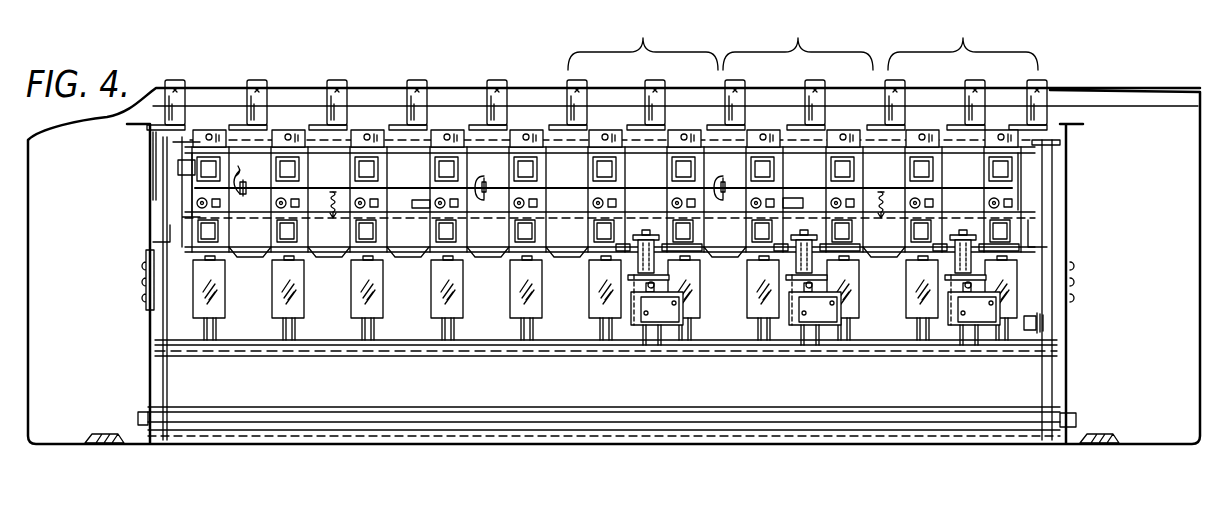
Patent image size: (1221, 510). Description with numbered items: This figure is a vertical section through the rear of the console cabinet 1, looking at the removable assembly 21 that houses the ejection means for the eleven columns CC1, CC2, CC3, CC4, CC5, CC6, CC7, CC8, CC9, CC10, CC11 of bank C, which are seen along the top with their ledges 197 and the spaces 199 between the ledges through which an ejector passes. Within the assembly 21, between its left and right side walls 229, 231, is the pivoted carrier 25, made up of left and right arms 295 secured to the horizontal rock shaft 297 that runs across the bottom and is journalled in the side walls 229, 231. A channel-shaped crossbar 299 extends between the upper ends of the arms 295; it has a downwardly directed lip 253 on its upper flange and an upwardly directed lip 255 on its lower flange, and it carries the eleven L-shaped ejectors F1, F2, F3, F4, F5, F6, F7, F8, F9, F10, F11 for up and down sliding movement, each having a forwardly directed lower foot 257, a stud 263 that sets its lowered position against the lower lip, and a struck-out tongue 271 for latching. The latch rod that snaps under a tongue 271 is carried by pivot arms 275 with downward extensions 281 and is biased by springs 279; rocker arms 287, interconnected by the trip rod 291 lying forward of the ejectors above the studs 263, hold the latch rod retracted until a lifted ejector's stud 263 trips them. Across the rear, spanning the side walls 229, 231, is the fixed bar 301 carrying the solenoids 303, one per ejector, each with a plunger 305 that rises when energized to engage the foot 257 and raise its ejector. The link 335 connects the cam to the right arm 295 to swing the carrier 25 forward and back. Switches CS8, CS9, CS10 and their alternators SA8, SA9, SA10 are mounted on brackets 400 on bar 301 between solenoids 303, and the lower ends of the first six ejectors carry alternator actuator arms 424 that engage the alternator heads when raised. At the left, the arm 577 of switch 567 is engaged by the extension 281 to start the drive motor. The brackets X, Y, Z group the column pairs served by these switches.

The console cabinet 1 is at (39, 455).
The removable assembly 21 is at (137, 384).
The pivoted carrier 25 is at (152, 194).
The ledges 197 is at (186, 131).
The space 199 is at (268, 131).
The side wall 229 is at (147, 341).
The side wall 231 is at (1070, 366).
The downwardly directed lip 253 is at (238, 160).
The upwardly directed lip 255 is at (245, 215).
The lower foot 257 is at (228, 256).
The stud 263 is at (594, 206).
The struck-out tongue 271 is at (622, 206).
The pivot arms 275 is at (178, 170).
The springs 279 is at (333, 188).
The downward extensions 281 is at (165, 231).
The rocker arms 287 is at (477, 183).
The trip rod 291 is at (423, 187).
The arms 295 is at (170, 391).
The rock shaft 297 is at (335, 432).
The crossbar 299 is at (706, 220).
The fixed bar 301 is at (401, 358).
The solenoids 303 is at (225, 291).
The plunger 305 is at (220, 327).
The link 335 is at (1033, 334).
The bracket 400 is at (643, 325).
The alternator actuator arm 424 is at (700, 253).
The switch 567 is at (156, 291).
The arm 577 is at (149, 263).
The column CC1 is at (1006, 93).
The column CC2 is at (930, 93).
The column CC3 is at (849, 93).
The column CC4 is at (770, 93).
The column CC5 is at (693, 93).
The column CC6 is at (613, 93).
The column CC7 is at (533, 93).
The column CC8 is at (453, 93).
The column CC9 is at (373, 93).
The column CC10 is at (294, 93).
The column CC11 is at (214, 93).
The ejector F1 is at (1017, 130).
The ejector F2 is at (941, 130).
The ejector F3 is at (859, 130).
The ejector F4 is at (779, 130).
The ejector F5 is at (701, 130).
The ejector F6 is at (622, 130).
The ejector F7 is at (541, 233).
The ejector F8 is at (461, 233).
The ejector F9 is at (381, 233).
The ejector F10 is at (301, 233).
The ejector F11 is at (221, 233).
The alternator SA8 is at (985, 274).
The alternator SA9 is at (825, 277).
The alternator SA10 is at (667, 277).
The switch CS8 is at (978, 318).
The switch CS9 is at (832, 318).
The switch CS10 is at (676, 318).
The group X is at (963, 40).
The group Y is at (798, 40).
The group Z is at (643, 41).